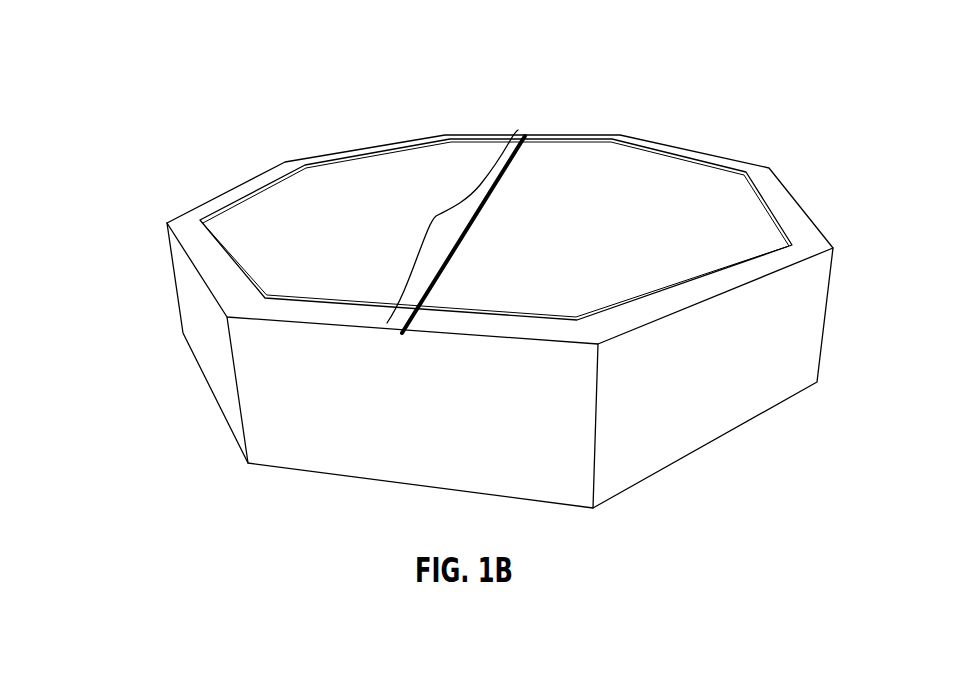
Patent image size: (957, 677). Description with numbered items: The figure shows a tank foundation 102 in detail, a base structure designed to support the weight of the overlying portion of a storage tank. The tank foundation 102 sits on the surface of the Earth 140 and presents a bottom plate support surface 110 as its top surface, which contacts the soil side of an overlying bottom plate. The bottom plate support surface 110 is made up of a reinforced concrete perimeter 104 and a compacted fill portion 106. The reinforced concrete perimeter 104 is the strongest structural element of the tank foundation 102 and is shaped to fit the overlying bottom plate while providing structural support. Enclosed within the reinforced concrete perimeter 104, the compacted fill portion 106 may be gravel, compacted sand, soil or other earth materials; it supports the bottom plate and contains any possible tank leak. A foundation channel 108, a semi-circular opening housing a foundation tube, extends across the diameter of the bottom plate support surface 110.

The tank foundation 102 is at (128, 135).
The reinforced concrete perimeter 104 is at (183, 232).
The compacted fill portion 106 is at (597, 245).
The foundation channel 108 is at (434, 216).
The bottom plate support surface 110 is at (835, 118).
The Earth 140 is at (357, 497).